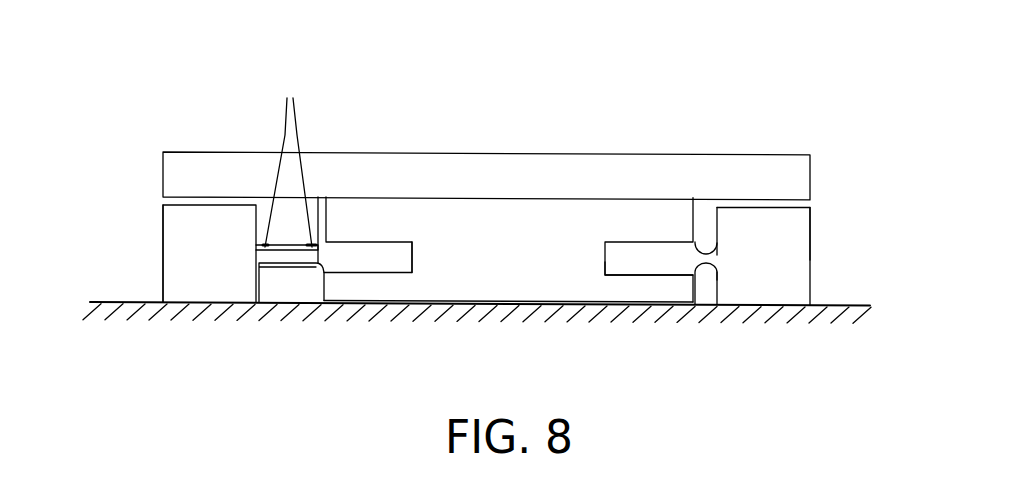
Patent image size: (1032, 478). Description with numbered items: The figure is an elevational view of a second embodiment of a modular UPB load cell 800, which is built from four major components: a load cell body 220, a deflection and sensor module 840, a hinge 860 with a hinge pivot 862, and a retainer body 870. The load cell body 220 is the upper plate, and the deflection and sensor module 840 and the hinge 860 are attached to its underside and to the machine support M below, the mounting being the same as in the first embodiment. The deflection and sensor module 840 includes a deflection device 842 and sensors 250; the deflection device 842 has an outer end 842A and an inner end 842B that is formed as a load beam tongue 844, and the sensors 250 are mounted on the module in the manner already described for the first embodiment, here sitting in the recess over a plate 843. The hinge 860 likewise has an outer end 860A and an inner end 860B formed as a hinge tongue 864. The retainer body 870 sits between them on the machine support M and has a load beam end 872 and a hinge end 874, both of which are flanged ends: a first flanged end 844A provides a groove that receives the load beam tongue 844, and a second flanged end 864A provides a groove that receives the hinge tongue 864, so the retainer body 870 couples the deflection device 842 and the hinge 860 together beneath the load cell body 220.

The modular UPB load cell 800 is at (566, 127).
The deflection and sensor module 840 is at (128, 212).
The load cell body 220 is at (763, 170).
The sensors 250 is at (288, 160).
The load beam tongue 844 is at (340, 245).
The load beam end 872 is at (383, 212).
The hinge end 874 is at (617, 215).
The hinge tongue 864 is at (640, 253).
The deflection device 842 is at (208, 278).
The outer end 842A is at (163, 263).
The plate 843 is at (277, 257).
The first flanged end 844A is at (358, 268).
The inner end 842B is at (396, 258).
The retainer body 870 is at (512, 277).
The second flanged end 864A is at (605, 260).
The hinge 860 is at (797, 267).
The outer end 860A is at (800, 240).
The inner end 860B is at (622, 267).
The hinge pivot 862 is at (703, 262).
The machine support M is at (838, 311).